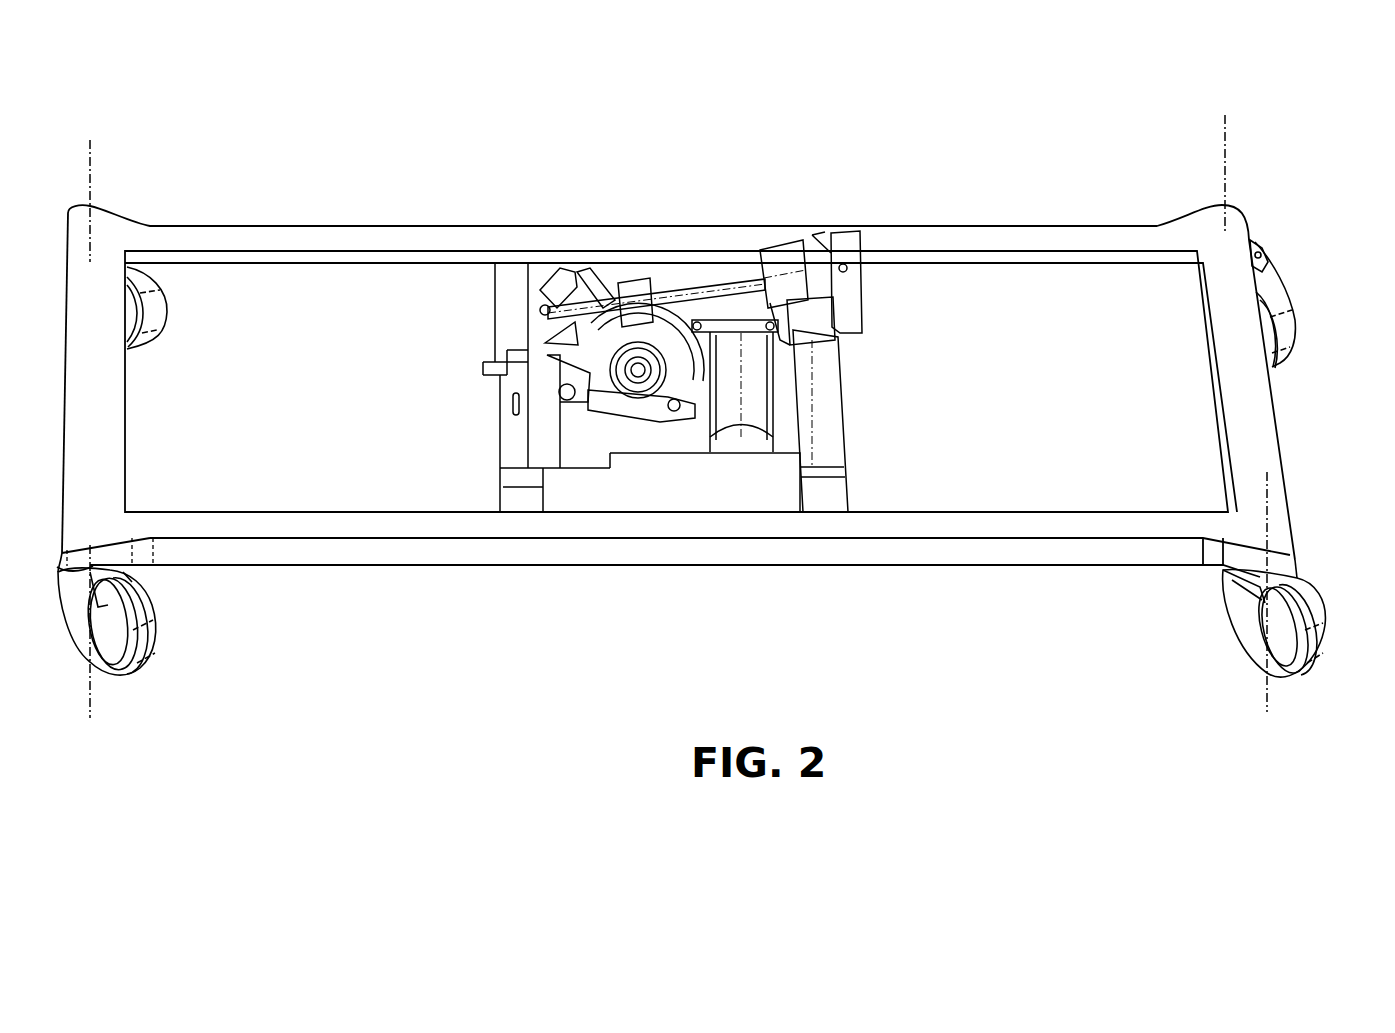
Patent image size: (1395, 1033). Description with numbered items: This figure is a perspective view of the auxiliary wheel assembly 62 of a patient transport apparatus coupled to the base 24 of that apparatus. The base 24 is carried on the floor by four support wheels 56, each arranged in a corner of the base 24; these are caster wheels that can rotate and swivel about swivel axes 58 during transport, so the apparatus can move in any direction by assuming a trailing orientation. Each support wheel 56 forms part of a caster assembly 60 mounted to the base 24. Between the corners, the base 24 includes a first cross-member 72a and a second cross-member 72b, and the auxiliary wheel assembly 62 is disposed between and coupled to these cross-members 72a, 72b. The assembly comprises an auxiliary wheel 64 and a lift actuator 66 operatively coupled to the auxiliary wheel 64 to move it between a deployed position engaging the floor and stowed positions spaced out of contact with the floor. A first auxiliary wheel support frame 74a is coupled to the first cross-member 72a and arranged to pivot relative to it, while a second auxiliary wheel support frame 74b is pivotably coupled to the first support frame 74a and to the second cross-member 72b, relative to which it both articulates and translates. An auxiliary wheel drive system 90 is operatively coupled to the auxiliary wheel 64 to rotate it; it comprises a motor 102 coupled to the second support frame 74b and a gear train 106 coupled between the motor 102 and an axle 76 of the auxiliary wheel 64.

The base 24 is at (1018, 237).
The support wheels 56 is at (155, 310).
The swivel axes 58 is at (678, 416).
The caster assembly 60 is at (152, 222).
The auxiliary wheel assembly 62 is at (673, 376).
The auxiliary wheel 64 is at (545, 343).
The lift actuator 66 is at (650, 292).
The first cross-member 72a is at (548, 442).
The second cross-member 72b is at (830, 383).
The first auxiliary wheel support frame 74a is at (623, 397).
The second auxiliary wheel support frame 74b is at (686, 410).
The axle 76 is at (600, 305).
The auxiliary wheel drive system 90 is at (717, 287).
The motor 102 is at (757, 400).
The gear train 106 is at (672, 302).